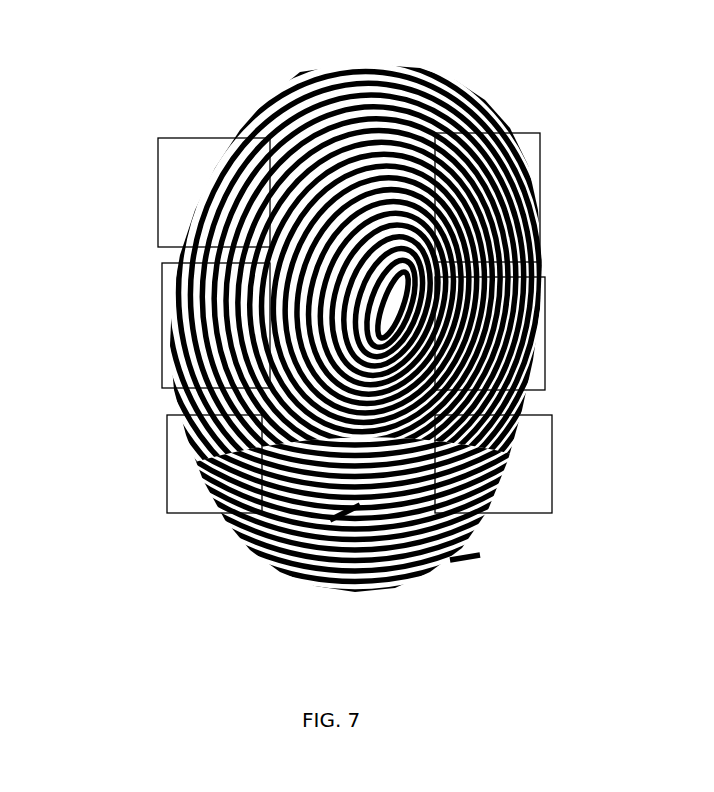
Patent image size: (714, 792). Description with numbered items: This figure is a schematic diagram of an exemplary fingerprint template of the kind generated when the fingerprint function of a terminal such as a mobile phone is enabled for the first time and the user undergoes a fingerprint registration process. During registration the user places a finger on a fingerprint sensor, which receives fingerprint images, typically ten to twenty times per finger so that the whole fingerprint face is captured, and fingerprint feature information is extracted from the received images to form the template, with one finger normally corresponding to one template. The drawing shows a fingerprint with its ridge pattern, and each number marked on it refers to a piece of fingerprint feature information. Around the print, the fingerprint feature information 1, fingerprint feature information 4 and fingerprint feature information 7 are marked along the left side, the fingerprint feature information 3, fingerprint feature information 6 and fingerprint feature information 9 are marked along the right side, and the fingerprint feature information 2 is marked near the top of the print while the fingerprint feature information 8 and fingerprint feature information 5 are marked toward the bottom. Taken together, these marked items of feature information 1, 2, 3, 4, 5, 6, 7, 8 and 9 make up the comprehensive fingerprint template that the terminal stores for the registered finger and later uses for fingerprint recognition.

The fingerprint feature information 1 is at (158, 200).
The fingerprint feature information 2 is at (345, 120).
The fingerprint feature information 3 is at (540, 193).
The fingerprint feature information 4 is at (162, 333).
The fingerprint feature information 5 is at (465, 560).
The fingerprint feature information 6 is at (546, 344).
The fingerprint feature information 7 is at (167, 467).
The fingerprint feature information 8 is at (345, 508).
The fingerprint feature information 9 is at (553, 474).